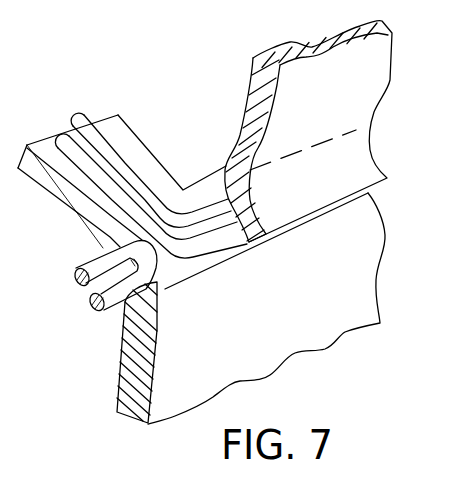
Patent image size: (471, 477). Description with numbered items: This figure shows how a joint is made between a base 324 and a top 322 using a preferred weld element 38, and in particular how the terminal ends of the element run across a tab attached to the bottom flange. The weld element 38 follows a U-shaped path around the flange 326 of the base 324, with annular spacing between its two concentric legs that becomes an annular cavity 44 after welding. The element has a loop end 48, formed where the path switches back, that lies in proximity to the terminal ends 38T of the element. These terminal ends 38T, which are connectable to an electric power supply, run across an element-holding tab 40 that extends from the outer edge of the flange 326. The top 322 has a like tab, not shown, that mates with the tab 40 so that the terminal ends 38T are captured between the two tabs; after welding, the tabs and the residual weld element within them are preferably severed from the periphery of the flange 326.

The weld element 38 is at (213, 237).
The terminal ends 38T is at (60, 134).
The element-holding tab 40 is at (143, 151).
The annular cavity 44 is at (226, 215).
The loop end 48 is at (163, 290).
The top 322 is at (371, 102).
The base 324 is at (363, 262).
The flange 326 is at (200, 260).